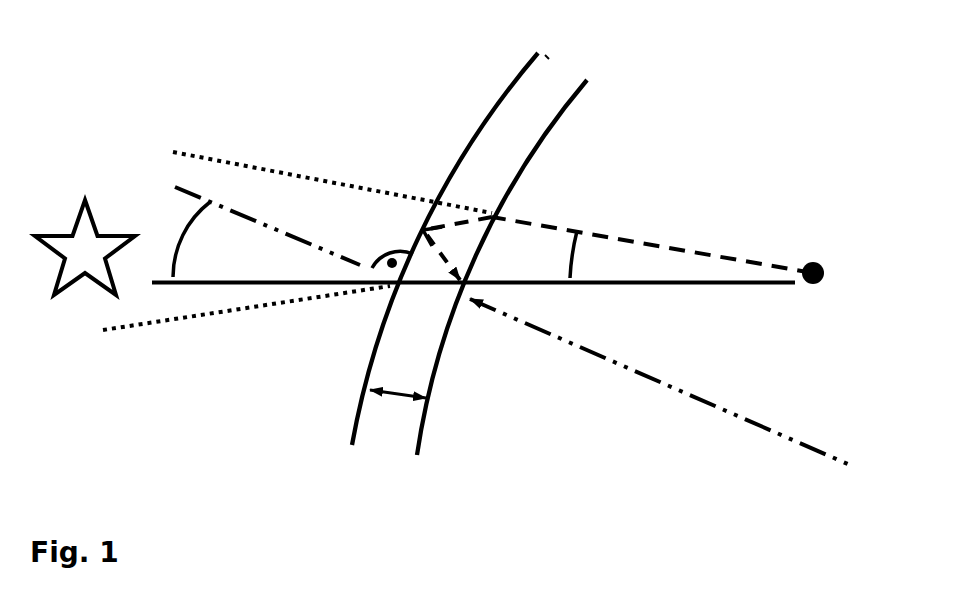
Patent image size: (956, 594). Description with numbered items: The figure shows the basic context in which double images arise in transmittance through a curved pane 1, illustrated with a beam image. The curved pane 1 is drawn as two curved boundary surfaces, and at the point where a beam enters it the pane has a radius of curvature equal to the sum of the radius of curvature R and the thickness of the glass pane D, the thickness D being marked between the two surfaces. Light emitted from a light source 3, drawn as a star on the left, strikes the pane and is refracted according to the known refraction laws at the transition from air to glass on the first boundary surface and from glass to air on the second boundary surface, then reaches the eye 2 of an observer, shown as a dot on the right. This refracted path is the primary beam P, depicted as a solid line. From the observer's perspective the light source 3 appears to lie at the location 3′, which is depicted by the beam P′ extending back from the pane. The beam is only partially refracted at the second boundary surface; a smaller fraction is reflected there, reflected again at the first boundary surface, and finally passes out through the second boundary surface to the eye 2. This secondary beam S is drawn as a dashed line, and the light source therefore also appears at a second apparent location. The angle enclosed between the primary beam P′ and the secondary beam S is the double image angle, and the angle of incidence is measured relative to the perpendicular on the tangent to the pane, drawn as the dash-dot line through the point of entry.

The curved pane 1 is at (358, 412).
The eye 2 is at (814, 256).
The light source 3 is at (85, 247).
The location 3′ is at (84, 343).
The thickness of the glass pane D is at (395, 415).
The secondary beam S is at (701, 251).
The primary beam P is at (722, 297).
The beam P′ is at (222, 343).
The radius of curvature R is at (661, 392).